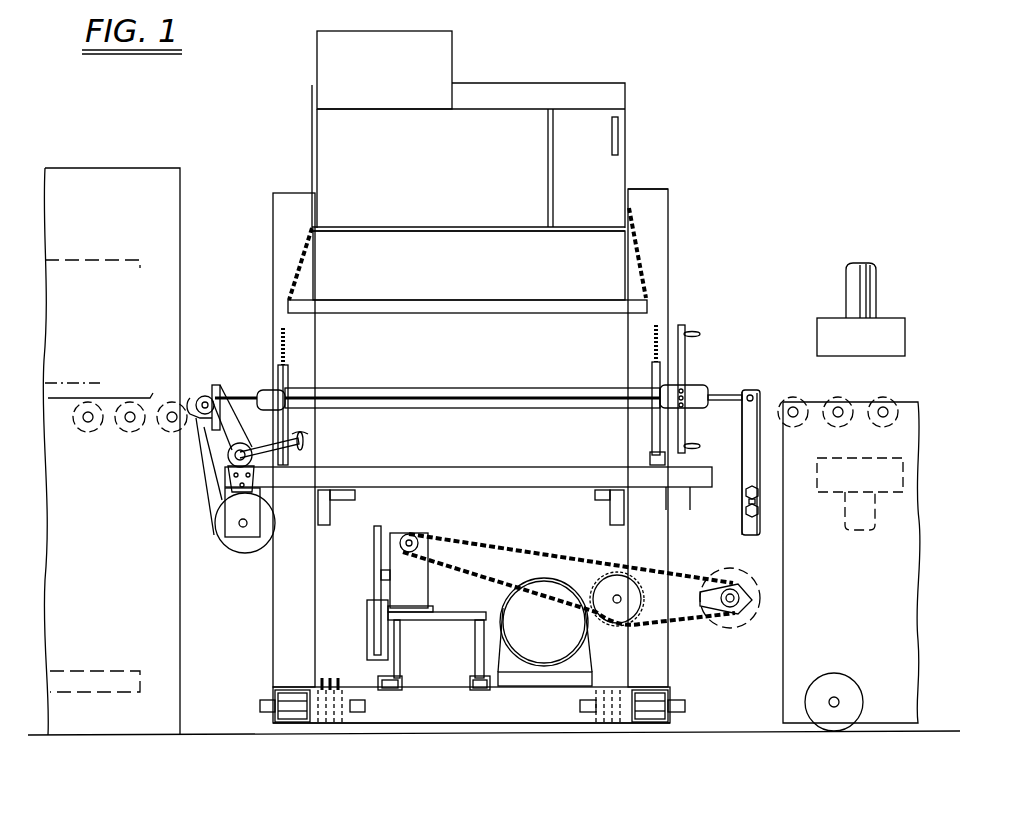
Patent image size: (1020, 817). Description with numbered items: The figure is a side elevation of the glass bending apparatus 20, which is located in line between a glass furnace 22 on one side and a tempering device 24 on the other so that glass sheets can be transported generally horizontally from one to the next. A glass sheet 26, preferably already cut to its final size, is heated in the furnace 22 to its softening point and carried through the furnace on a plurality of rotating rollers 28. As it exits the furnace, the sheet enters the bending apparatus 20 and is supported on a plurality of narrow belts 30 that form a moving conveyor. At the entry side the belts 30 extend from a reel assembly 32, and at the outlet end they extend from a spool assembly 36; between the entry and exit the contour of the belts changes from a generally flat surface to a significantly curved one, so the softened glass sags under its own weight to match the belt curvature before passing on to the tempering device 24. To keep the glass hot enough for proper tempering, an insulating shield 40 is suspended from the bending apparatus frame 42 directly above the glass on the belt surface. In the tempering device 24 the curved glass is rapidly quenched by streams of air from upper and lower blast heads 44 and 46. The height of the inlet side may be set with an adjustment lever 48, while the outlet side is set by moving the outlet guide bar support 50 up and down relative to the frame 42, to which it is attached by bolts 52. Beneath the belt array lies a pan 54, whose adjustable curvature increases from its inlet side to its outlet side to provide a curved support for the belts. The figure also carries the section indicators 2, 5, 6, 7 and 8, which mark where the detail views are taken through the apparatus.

The section line 2- 2 is at (35, 325).
The section line 5-5 / threaded adjusting rod 5 is at (290, 326).
The section line 6- 6 is at (663, 305).
The section line 7- 7 is at (690, 330).
The section line 8- 8 is at (760, 358).
The glass bending apparatus 20 is at (693, 258).
The glass furnace 22 is at (148, 168).
The tempering device 24 is at (873, 242).
The glass sheet 26 is at (108, 393).
The rotating rollers 28 is at (166, 382).
The narrow belts 30 is at (233, 386).
The reel assembly 32 is at (216, 545).
The spool assembly 36 is at (740, 628).
The insulating shield 40 is at (565, 300).
The bending apparatus frame 42 is at (670, 200).
The upper blast head 44 is at (878, 292).
The lower blast head 46 is at (872, 530).
The adjustment lever 48 is at (250, 420).
The outlet guide bar support 50 is at (760, 447).
The bolts 52 is at (758, 497).
The pan 54 is at (515, 413).